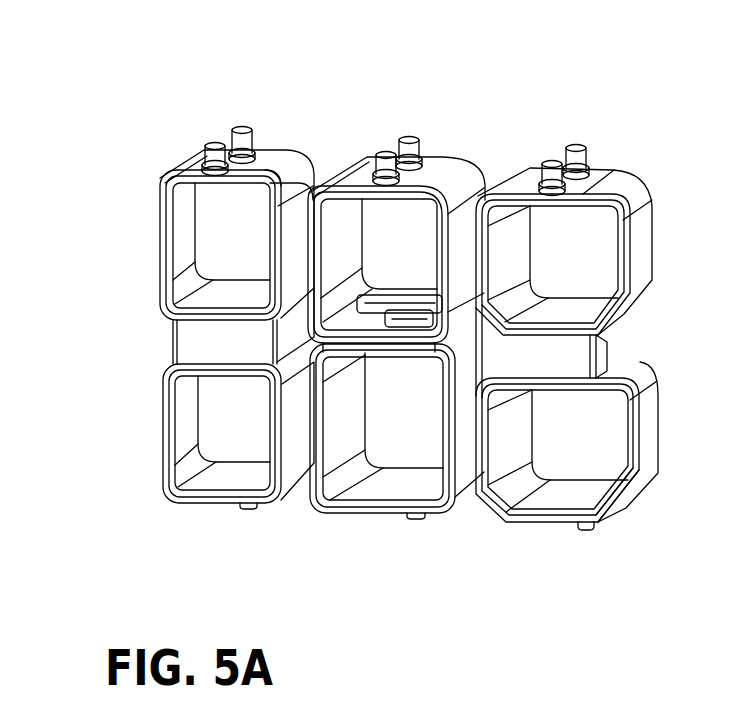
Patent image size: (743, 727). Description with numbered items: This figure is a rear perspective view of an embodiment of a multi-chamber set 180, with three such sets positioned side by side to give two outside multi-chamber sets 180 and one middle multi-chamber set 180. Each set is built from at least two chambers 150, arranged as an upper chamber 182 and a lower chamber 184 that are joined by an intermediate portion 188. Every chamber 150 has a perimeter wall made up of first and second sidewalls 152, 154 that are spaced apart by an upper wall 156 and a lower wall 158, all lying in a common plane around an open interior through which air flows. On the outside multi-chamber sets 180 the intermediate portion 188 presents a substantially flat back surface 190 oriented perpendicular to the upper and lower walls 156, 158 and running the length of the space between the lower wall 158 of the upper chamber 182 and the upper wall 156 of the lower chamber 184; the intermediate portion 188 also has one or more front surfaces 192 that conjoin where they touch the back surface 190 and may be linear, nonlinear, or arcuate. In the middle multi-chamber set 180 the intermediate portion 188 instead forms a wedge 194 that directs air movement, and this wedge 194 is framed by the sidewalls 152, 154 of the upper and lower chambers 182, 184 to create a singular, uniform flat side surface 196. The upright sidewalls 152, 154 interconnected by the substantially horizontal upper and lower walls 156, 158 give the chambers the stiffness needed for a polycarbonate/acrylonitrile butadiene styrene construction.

The chamber 150 is at (180, 147).
The first sidewall 152 is at (162, 222).
The second sidewall 154 is at (282, 437).
The upper wall 156 is at (264, 150).
The lower wall 158 is at (217, 317).
The multi-chamber set 180 is at (603, 162).
The upper chamber 182 is at (661, 222).
The lower chamber 184 is at (287, 217).
The intermediate portion 188 is at (163, 329).
The back surface 190 is at (200, 346).
The front surface 192 is at (600, 352).
The wedge 194 is at (422, 222).
The flat side surface 196 is at (330, 317).